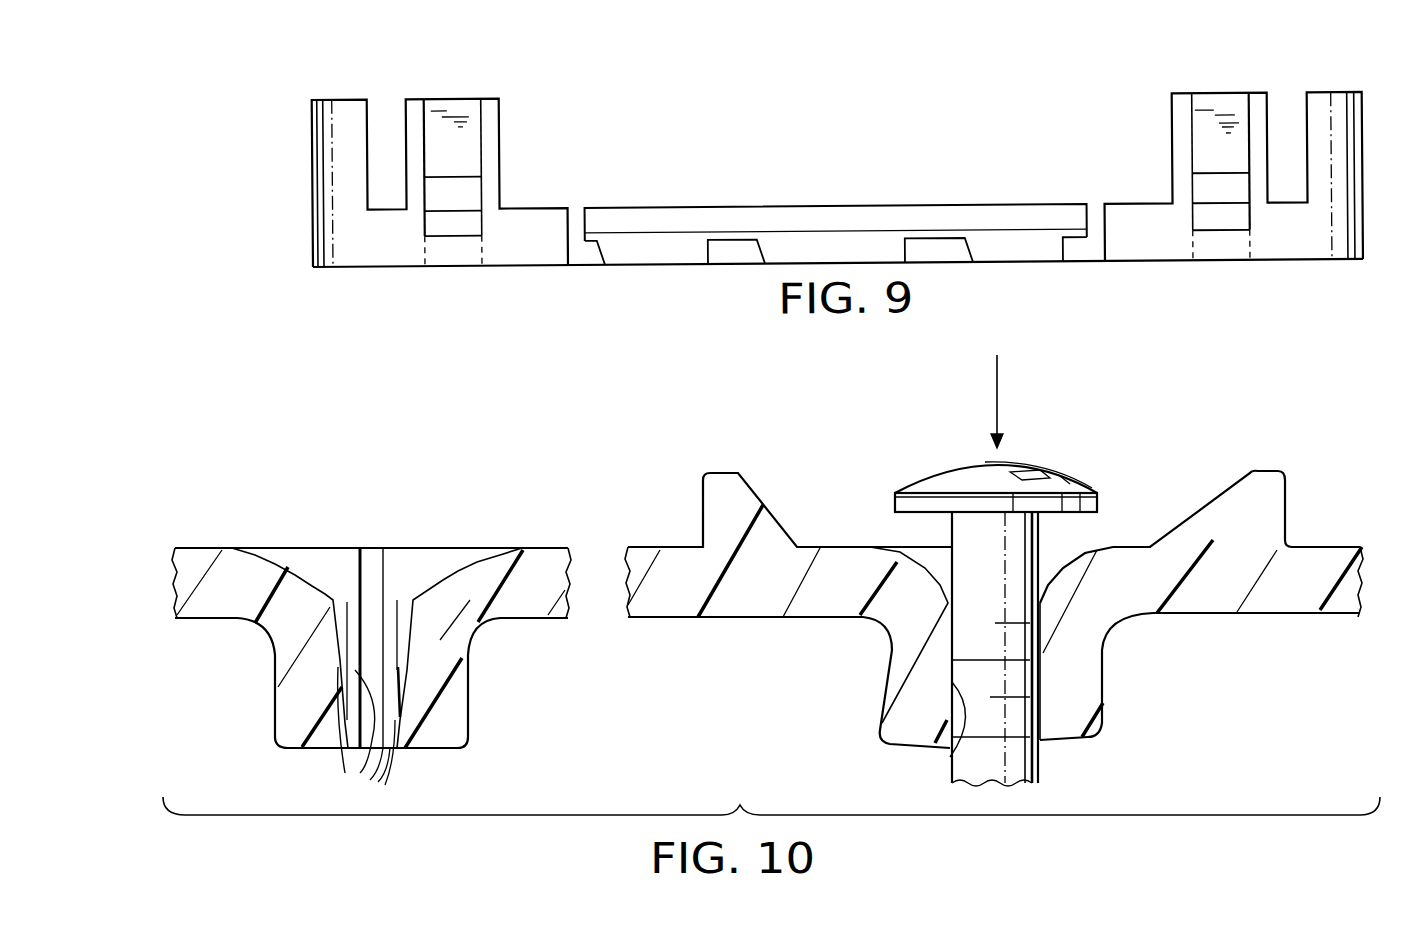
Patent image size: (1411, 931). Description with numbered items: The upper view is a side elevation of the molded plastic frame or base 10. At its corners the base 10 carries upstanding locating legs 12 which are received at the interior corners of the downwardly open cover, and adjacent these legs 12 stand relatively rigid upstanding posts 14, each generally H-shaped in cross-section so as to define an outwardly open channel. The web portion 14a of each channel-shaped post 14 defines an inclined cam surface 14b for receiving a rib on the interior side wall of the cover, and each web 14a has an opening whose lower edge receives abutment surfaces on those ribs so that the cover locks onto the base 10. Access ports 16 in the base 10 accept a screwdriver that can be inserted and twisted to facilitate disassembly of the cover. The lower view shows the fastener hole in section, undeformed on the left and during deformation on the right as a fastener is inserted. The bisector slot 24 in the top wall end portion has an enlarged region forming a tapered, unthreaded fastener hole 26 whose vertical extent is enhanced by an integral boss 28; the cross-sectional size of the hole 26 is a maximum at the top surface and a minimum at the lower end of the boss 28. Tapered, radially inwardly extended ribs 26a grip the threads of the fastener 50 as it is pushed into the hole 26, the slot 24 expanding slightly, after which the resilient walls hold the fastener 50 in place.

In FIG. 9, the base 10 is at (630, 97).
In FIG. 9, the locating leg 12 is at (318, 100).
In FIG. 9, the upstanding post 14 is at (418, 92).
In FIG. 9, the web portion 14a is at (463, 100).
In FIG. 9, the inclined cam surface 14b is at (468, 147).
In FIG. 9, the access port 16 is at (427, 240).
In FIG. 10, the bisector slot 24 is at (381, 566).
In FIG. 10, the fastener hole 26 is at (340, 663).
In FIG. 10, the tapered rib 26a is at (1040, 717).
In FIG. 10, the boss 28 is at (470, 688).
In FIG. 10, the threaded fastener 50 is at (1055, 479).